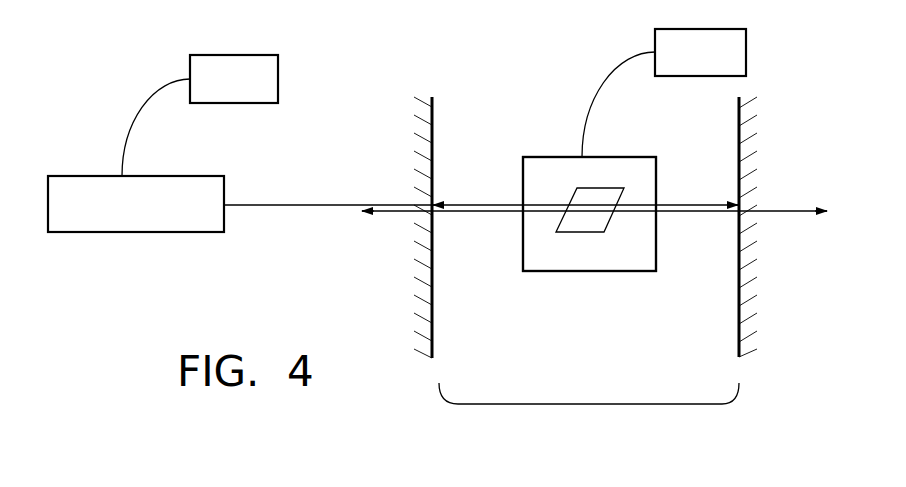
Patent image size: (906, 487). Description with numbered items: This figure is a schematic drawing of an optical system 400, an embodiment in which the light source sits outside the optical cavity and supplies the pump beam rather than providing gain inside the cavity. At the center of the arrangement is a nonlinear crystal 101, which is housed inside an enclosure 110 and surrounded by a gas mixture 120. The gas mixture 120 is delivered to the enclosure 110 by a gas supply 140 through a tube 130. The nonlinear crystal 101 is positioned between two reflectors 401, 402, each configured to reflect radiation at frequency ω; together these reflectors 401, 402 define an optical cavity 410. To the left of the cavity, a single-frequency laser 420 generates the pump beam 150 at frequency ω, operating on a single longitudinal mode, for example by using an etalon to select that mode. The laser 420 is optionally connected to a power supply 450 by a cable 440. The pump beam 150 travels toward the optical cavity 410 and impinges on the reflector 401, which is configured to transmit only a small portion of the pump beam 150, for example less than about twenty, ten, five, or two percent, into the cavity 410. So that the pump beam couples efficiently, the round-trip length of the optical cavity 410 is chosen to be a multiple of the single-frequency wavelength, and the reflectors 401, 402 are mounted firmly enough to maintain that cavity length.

The optical system 400 is at (243, 270).
The power supply 450 is at (246, 85).
The single-frequency laser 420 is at (95, 209).
The cable 440 is at (128, 129).
The gas supply 140 is at (710, 58).
The tube 130 is at (597, 92).
The gas mixture 120 is at (556, 187).
The enclosure 110 is at (523, 250).
The nonlinear crystal 101 is at (615, 226).
The pump beam 150 is at (297, 204).
The reflector 401 is at (433, 313).
The reflector 402 is at (738, 288).
The optical cavity 410 is at (590, 404).